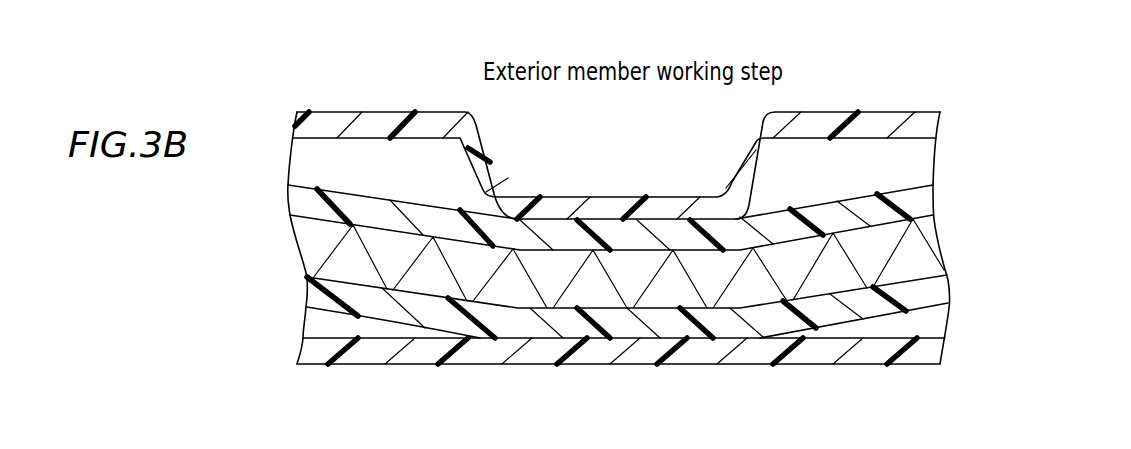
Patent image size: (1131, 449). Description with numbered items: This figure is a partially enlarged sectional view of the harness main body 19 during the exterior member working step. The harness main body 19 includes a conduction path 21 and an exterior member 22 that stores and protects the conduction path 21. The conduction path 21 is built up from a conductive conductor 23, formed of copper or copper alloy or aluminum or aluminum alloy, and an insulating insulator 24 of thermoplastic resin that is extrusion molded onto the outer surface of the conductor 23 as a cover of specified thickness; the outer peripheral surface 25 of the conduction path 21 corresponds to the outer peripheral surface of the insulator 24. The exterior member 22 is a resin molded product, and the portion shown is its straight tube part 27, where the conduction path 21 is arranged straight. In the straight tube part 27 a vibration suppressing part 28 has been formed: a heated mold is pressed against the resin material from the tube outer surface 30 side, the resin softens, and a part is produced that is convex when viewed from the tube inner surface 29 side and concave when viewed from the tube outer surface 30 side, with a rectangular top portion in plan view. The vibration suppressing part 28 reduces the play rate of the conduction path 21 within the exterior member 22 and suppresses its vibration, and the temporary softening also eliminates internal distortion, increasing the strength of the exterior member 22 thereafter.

The harness main body 19 is at (243, 91).
The conduction path 21 is at (1062, 237).
The exterior member 22 is at (837, 112).
The conductor 23 is at (933, 245).
The insulator 24 is at (947, 294).
The outer peripheral surface of the conduction path 25 is at (921, 308).
The straight tube part 27 is at (383, 112).
The vibration suppressing part 28 is at (551, 206).
The tube inner surface 29 is at (914, 139).
The tube outer surface 30 is at (908, 112).